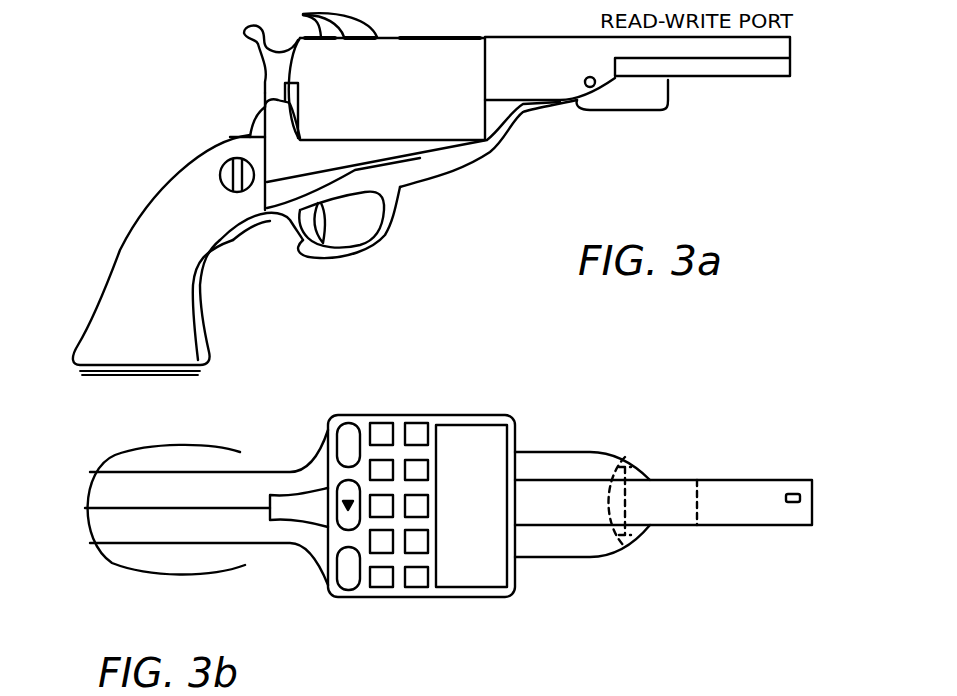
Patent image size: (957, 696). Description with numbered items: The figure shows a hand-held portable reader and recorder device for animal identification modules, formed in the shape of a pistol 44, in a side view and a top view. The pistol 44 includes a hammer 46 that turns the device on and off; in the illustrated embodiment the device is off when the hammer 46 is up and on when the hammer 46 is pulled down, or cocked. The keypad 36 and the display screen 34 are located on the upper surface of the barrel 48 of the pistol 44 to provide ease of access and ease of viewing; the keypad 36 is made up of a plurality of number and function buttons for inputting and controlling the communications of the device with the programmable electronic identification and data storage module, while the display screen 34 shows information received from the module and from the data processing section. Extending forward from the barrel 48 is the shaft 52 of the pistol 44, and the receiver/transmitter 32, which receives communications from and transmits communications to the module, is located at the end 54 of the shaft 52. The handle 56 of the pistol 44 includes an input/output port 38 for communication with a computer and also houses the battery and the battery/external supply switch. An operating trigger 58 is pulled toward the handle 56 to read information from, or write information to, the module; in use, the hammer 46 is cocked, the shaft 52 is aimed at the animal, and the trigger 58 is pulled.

In FIG. 3A, the receiver/transmitter section 32 is at (795, 46).
In FIG. 3B, the receiver/transmitter section 32 is at (813, 498).
In FIG. 3A, the display screen 34 is at (470, 37).
In FIG. 3B, the display screen 34 is at (483, 432).
In FIG. 3A, the keypad 36 is at (327, 20).
In FIG. 3B, the keypad 36 is at (393, 425).
In FIG. 3A, the input/output port 38 is at (193, 375).
In FIG. 3A, the pistol 44 is at (207, 111).
In FIG. 3B, the pistol 44 is at (667, 432).
In FIG. 3A, the hammer 46 is at (255, 42).
In FIG. 3B, the hammer 46 is at (290, 508).
In FIG. 3A, the barrel 48 is at (475, 58).
In FIG. 3B, the barrel 48 is at (516, 573).
In FIG. 3A, the shaft 52 is at (707, 78).
In FIG. 3B, the shaft 52 is at (731, 527).
In FIG. 3A, the end of the shaft 54 is at (773, 78).
In FIG. 3B, the end of the shaft 54 is at (813, 527).
In FIG. 3A, the handle 56 is at (120, 232).
In FIG. 3B, the handle 56 is at (92, 497).
In FIG. 3A, the operating trigger 58 is at (340, 254).